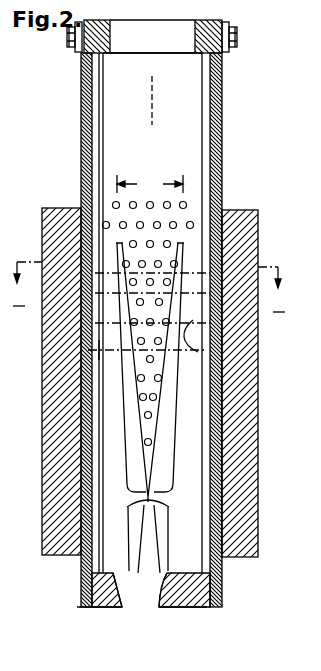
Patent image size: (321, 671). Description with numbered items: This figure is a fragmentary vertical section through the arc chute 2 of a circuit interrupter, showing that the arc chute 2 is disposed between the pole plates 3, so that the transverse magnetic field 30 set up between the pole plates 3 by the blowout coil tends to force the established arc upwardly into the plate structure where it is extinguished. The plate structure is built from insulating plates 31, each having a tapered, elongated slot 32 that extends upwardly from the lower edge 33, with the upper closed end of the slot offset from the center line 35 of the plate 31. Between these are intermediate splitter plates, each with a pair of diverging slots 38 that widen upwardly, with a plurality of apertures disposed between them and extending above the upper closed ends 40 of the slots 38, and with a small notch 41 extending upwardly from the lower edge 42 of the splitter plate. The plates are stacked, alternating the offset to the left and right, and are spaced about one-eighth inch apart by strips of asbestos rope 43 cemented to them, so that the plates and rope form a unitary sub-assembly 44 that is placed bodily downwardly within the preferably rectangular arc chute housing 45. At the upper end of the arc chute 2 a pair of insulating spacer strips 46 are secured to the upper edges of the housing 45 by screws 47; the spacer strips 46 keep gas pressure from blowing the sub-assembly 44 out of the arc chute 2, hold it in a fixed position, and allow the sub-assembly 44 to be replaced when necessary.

The arc chute 2 is at (29, 136).
The pole plates 3 is at (42, 389).
The magnetic field 30 is at (184, 337).
The insulating plate 31 is at (152, 573).
The tapered elongated slot 32 is at (53, 350).
The lower edge 33 is at (118, 600).
The center line 35 is at (153, 94).
The diverging slots 38 is at (82, 312).
The upper closed ends 40 is at (117, 242).
The notch 41 is at (129, 549).
The lower edge 42 is at (161, 580).
The asbestos rope 43 is at (100, 80).
The sub-assembly 44 is at (138, 106).
The arc chute housing 45 is at (222, 195).
The insulating spacer strips 46 is at (197, 19).
The screws 47 is at (76, 46).